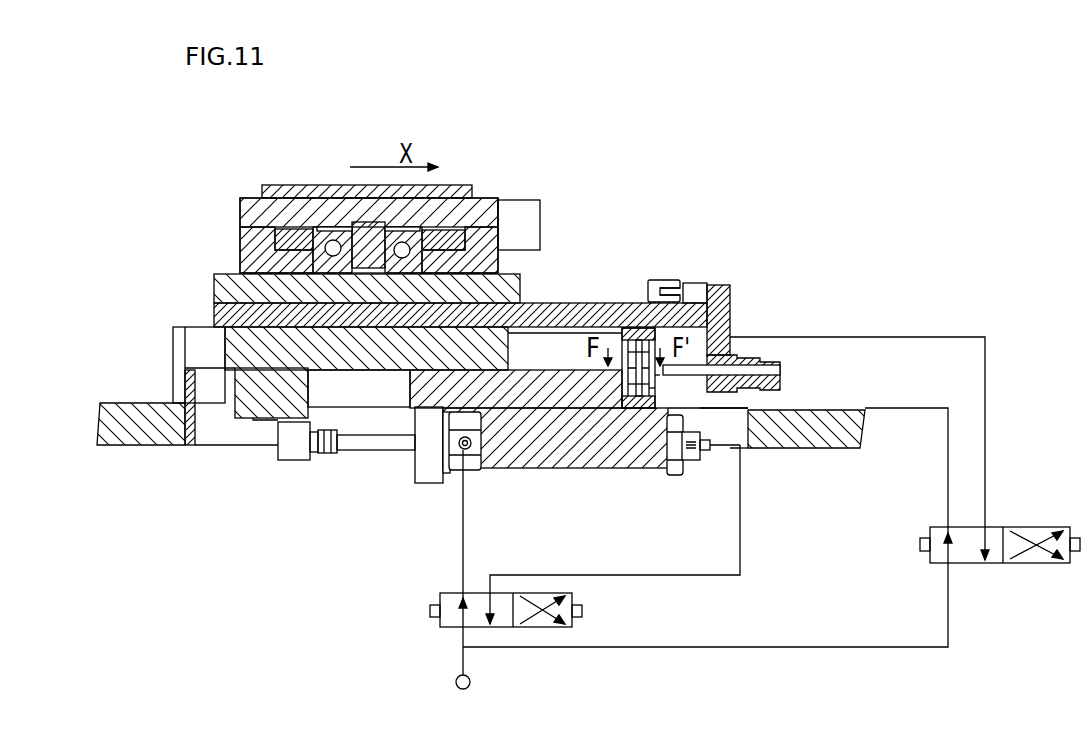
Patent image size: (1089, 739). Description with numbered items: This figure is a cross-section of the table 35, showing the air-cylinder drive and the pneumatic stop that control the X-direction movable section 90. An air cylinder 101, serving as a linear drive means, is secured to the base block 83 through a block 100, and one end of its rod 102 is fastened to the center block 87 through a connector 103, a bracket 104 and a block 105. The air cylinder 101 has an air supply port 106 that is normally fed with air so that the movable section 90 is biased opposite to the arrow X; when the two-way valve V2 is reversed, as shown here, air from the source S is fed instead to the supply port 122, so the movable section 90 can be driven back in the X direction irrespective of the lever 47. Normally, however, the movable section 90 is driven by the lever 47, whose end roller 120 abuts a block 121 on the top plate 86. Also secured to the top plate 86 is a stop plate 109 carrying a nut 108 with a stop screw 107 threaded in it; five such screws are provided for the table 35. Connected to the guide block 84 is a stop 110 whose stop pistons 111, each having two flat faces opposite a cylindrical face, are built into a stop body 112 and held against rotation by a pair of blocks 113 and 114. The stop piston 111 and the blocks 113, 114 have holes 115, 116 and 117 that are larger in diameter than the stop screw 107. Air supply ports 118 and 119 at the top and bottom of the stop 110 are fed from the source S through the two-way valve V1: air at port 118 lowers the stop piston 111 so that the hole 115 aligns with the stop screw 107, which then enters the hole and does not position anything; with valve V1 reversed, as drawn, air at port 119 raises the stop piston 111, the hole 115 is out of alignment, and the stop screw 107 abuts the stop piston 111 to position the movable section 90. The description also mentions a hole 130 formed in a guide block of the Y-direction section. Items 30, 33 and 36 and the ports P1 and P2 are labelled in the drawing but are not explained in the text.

The table 30 is at (847, 452).
The top plate 33 is at (327, 193).
The table 35 is at (547, 302).
The slide block 36 is at (240, 213).
The lever 47 is at (657, 283).
The base block 83 is at (575, 395).
The guide block 84 is at (202, 342).
The top plate 86 is at (590, 313).
The center block 87 is at (230, 402).
The X-direction movable portion 90 is at (216, 297).
The block 100 is at (425, 448).
The air cylinder 101 is at (513, 445).
The rod 102 is at (370, 445).
The connector 103 is at (302, 452).
The bracket 104 is at (282, 437).
The block 105 is at (248, 410).
The air supply port 106 is at (690, 468).
The stop screw 107 is at (753, 368).
The nut 108 is at (730, 352).
The stop plate 109 is at (733, 318).
The stop 110 is at (636, 395).
The stop piston 111 is at (641, 395).
The stop body 112 is at (653, 380).
The block 113 is at (630, 380).
The block 114 is at (640, 335).
The hole 115 is at (628, 330).
The hole 116 is at (628, 405).
The hole 117 is at (705, 407).
The air supply port 118 is at (650, 330).
The air supply port 119 is at (648, 400).
The end roller 120 is at (675, 290).
The block 121 is at (700, 288).
The supply port 122 is at (446, 465).
The hole 130 is at (327, 240).
The two-way valve V1 is at (1003, 503).
The two-way valve V2 is at (418, 611).
The source S is at (445, 680).
The port P1 is at (712, 461).
The port P2 is at (478, 441).